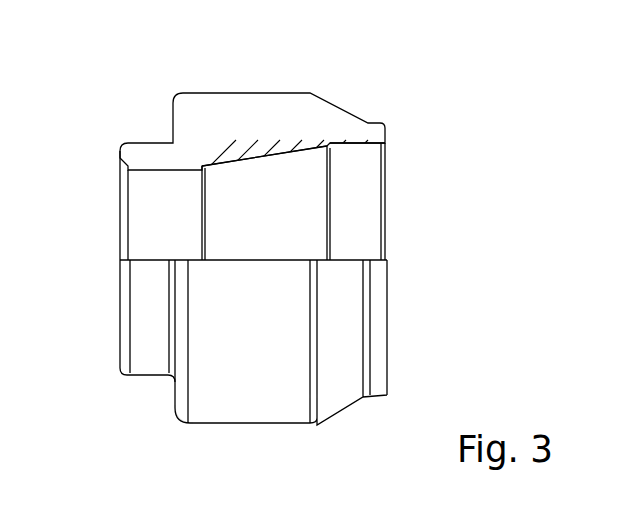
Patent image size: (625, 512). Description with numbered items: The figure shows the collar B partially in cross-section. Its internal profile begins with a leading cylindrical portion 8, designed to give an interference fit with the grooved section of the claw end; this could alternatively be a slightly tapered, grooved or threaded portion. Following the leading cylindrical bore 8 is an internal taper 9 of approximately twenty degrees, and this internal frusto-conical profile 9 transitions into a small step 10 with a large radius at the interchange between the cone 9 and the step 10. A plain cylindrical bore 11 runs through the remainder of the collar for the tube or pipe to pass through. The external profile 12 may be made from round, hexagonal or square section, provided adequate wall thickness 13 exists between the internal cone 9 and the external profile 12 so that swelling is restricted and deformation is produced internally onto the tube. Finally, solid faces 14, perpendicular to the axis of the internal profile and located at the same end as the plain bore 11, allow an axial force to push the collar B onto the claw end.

The leading cylindrical portion 8 is at (358, 147).
The internal taper 9 is at (280, 158).
The step 10 is at (199, 173).
The plain cylindrical bore 11 is at (152, 172).
The external profile 12 is at (253, 426).
The wall thickness 13 is at (253, 117).
The solid faces 14 is at (167, 398).
The collar B is at (183, 439).